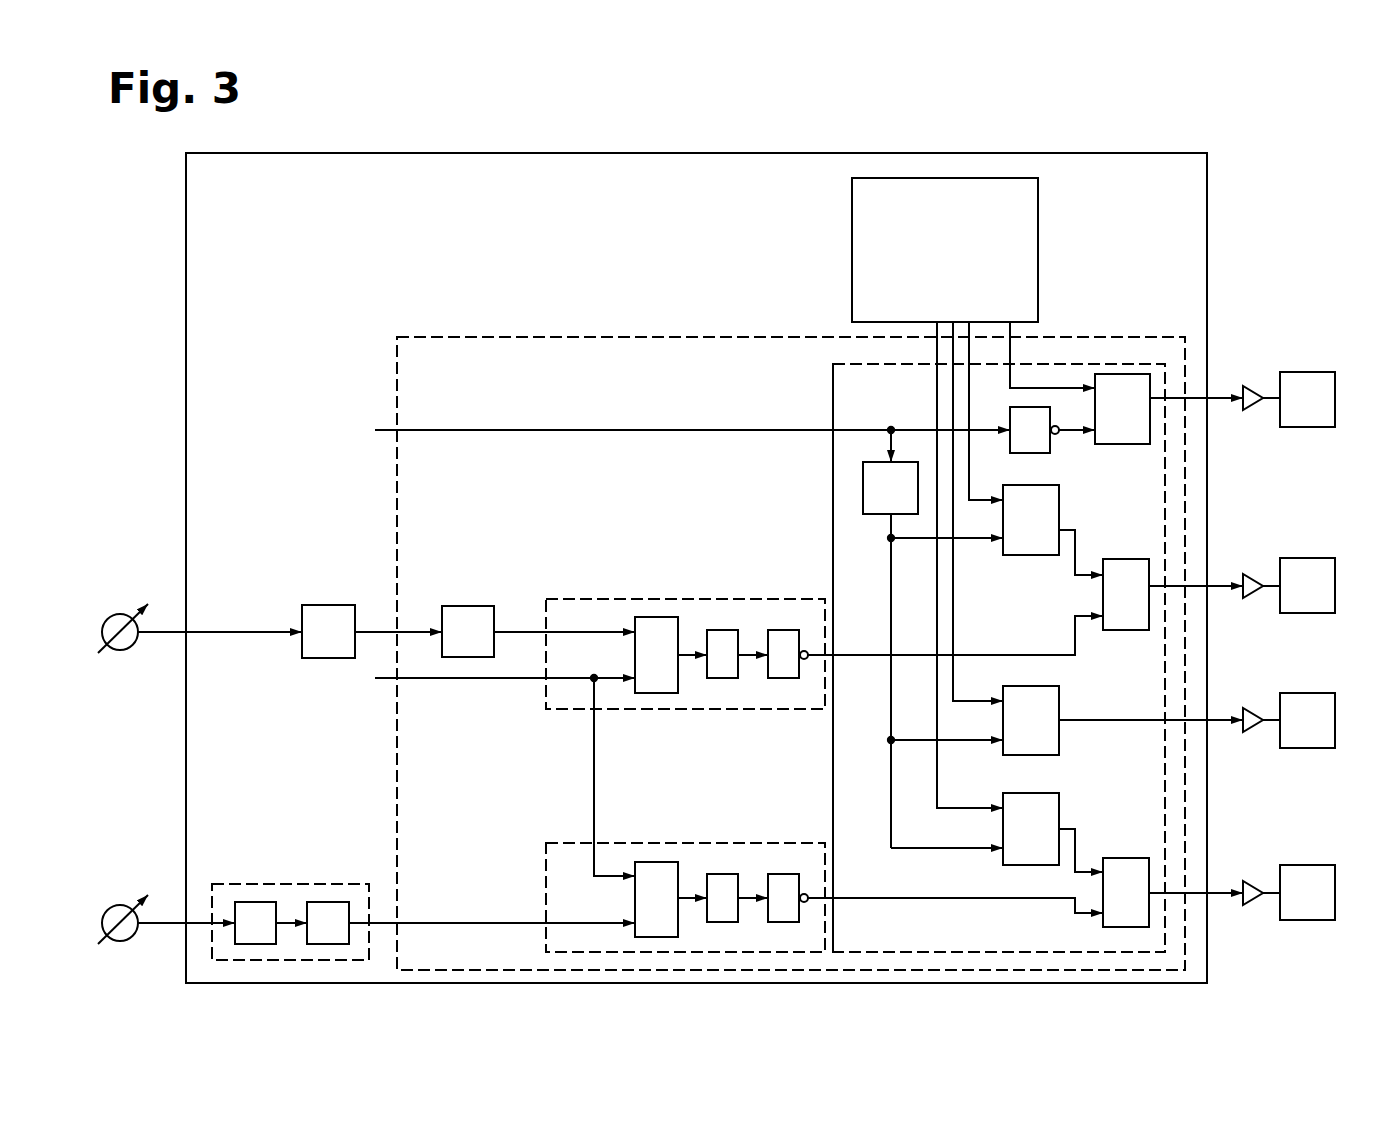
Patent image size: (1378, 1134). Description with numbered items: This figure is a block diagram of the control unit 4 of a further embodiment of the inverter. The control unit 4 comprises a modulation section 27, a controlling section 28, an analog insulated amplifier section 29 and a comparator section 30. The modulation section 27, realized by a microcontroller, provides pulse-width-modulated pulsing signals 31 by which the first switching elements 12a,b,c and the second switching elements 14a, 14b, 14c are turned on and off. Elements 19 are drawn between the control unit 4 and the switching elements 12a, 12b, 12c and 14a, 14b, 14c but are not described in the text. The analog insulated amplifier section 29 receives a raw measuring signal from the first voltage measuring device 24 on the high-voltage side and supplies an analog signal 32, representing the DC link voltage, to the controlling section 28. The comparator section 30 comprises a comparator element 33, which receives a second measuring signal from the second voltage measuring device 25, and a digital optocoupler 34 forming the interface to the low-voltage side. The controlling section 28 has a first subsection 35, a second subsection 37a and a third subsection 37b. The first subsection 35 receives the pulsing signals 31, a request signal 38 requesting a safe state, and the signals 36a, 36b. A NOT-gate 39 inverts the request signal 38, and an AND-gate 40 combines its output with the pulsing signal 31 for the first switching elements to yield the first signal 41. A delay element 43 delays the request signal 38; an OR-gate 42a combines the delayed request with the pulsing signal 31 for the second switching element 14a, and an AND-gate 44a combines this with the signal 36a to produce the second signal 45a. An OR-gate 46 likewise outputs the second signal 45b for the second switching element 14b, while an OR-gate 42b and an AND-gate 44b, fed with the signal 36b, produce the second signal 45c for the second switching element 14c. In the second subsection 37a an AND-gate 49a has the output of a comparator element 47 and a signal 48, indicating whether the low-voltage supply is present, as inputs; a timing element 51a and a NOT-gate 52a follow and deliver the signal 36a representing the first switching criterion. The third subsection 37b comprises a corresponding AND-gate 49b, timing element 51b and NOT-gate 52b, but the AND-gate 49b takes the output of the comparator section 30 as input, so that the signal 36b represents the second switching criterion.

The control unit 4 is at (1208, 193).
The first switching elements 12a,b,c is at (1310, 372).
The first switching element 12a is at (1312, 354).
The first switching element 12b is at (1312, 354).
The first switching element 12c is at (1312, 354).
The second switching element 14a is at (1310, 558).
The second switching element 14b is at (1325, 693).
The second switching element 14c is at (1320, 865).
The driver stage 19 is at (1252, 386).
The first voltage measuring device 24 is at (107, 618).
The second voltage measuring device 25 is at (107, 908).
The modulation section 27 is at (1039, 245).
The controlling section 28 is at (712, 337).
The analog insulated amplifier section 29 is at (328, 605).
The comparator section 30 is at (232, 884).
The pulsing signals 31 is at (1042, 328).
The analog signal 32 is at (408, 630).
The comparator element 33 is at (265, 902).
The digital optocoupler 34 is at (322, 902).
The first subsection 35 is at (830, 477).
The signal 36a is at (866, 655).
The signal 36b is at (866, 898).
The second subsection 37a is at (568, 599).
The third subsection 37b is at (568, 843).
The request signal 38 is at (508, 430).
The NOT-gate 39 is at (1035, 455).
The AND-gate 40 is at (1140, 446).
The first signal 41 is at (1218, 400).
The OR-gate 42a is at (1031, 557).
The OR-gate 42b is at (1062, 808).
The delay element 43 is at (911, 462).
The AND-gate 44a is at (1130, 632).
The AND-gate 44b is at (1130, 858).
The second signal 45a is at (1218, 588).
The second signal 45b is at (1218, 722).
The second signal 45c is at (1218, 895).
The OR-gate 46 is at (1060, 738).
The comparator element 47 is at (470, 606).
The signal 48 is at (455, 683).
The AND-gate 49a is at (658, 617).
The AND-gate 49b is at (658, 862).
The timing element 51a is at (722, 630).
The timing element 51b is at (722, 874).
The NOT-gate 52a is at (782, 630).
The NOT-gate 52b is at (782, 874).